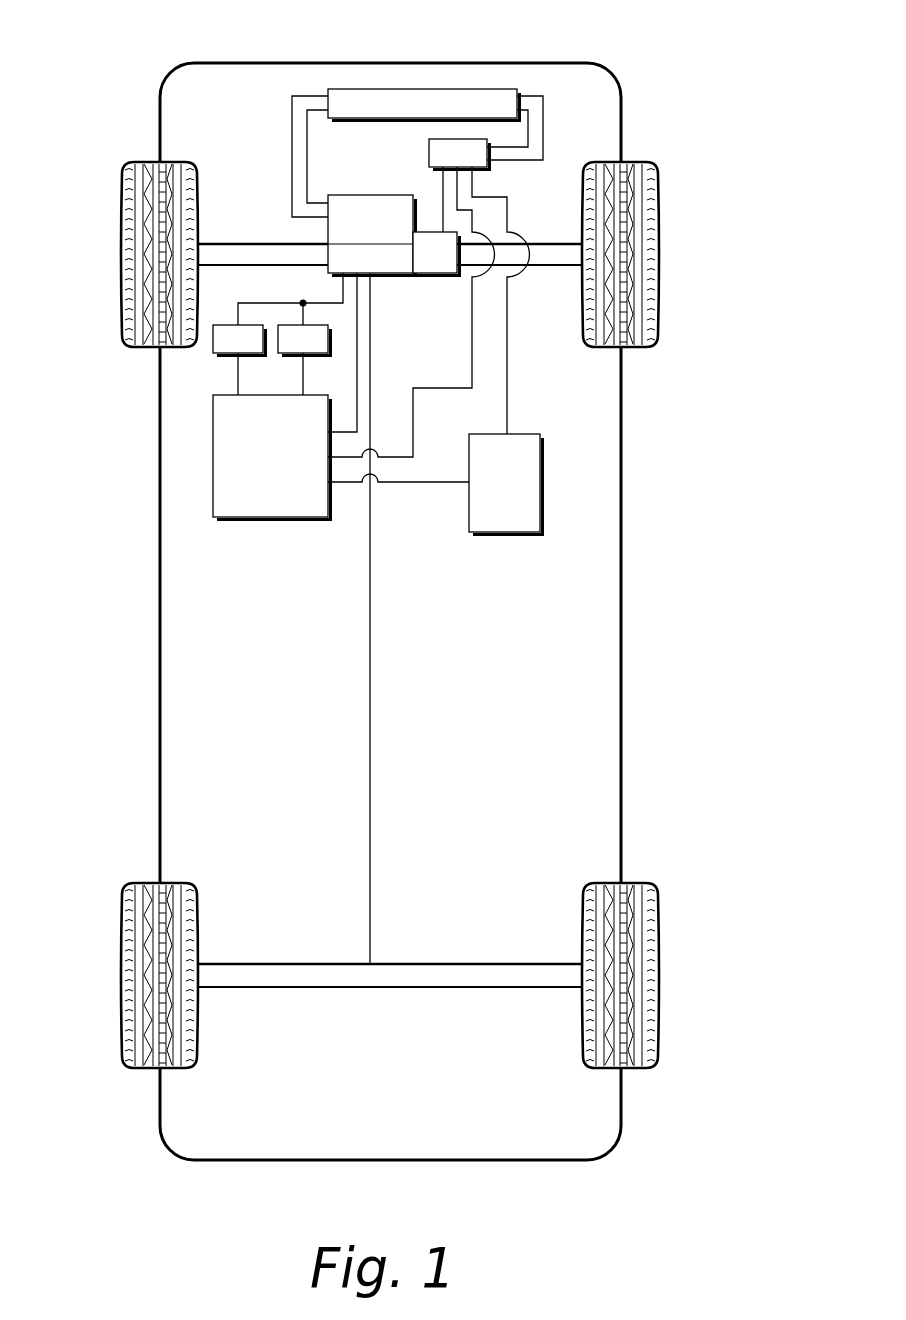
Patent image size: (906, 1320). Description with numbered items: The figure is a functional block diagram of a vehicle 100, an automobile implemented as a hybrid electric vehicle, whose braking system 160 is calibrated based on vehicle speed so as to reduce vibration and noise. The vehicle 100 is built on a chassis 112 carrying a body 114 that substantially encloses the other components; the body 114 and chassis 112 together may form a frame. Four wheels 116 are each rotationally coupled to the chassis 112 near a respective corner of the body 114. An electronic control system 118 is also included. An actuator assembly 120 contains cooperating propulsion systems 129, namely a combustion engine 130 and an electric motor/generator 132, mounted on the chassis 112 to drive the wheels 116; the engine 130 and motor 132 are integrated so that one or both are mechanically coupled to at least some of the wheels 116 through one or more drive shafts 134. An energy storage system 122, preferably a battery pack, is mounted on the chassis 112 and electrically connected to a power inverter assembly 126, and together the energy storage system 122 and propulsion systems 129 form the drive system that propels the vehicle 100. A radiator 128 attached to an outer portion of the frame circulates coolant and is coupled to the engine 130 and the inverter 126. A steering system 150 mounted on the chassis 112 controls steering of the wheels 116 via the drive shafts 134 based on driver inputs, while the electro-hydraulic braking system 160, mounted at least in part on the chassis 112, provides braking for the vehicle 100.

The vehicle 100 is at (432, 584).
The chassis 112 is at (368, 818).
The body 114 is at (160, 568).
The wheels 116 is at (135, 172).
The electronic control system 118 is at (272, 525).
The actuator assembly 120 is at (363, 270).
The energy storage system 122 is at (545, 467).
The power inverter assembly 126 is at (429, 157).
The radiator 128 is at (442, 89).
The propulsion systems 129 is at (363, 246).
The combustion engine 130 is at (340, 262).
The electric motor/generator 132 is at (433, 262).
The drive shafts 134 is at (213, 244).
The steering system 150 is at (230, 358).
The braking system 160 is at (297, 358).